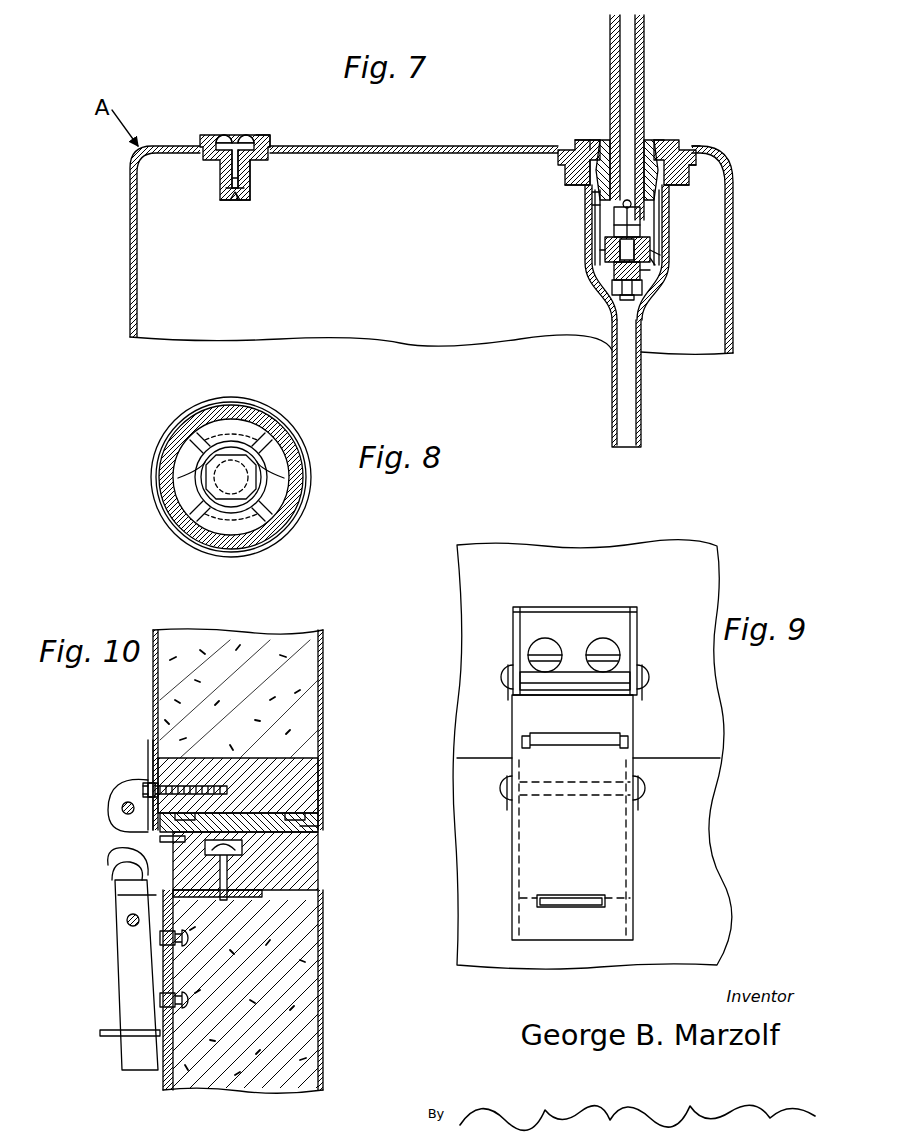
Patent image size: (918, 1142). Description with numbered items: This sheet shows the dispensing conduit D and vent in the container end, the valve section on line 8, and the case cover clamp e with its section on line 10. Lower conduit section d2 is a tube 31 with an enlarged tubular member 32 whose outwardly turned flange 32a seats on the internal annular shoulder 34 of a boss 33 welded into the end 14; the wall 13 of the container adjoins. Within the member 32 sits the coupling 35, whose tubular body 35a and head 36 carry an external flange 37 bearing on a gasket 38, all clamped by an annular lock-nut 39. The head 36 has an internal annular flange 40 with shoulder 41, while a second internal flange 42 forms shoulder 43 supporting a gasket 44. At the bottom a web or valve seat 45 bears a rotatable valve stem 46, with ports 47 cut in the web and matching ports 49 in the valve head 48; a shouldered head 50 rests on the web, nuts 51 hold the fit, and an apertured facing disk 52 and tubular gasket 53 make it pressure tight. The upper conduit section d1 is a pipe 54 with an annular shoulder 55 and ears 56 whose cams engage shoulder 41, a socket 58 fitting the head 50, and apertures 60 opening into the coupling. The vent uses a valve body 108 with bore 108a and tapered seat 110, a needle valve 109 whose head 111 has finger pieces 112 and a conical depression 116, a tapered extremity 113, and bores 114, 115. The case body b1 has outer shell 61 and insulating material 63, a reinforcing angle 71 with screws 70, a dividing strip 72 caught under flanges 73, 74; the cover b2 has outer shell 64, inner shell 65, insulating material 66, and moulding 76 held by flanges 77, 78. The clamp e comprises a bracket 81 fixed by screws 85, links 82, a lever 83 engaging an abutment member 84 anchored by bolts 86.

In FIG. 7, the tank wall 13 is at (733, 306).
In FIG. 7, the end of the container 14 is at (435, 145).
In FIG. 7, the valve body 108 is at (220, 165).
In FIG. 7, the bore 108a is at (241, 201).
In FIG. 7, the needle valve 109 is at (252, 179).
In FIG. 7, the tapered valve seat 110 is at (237, 201).
In FIG. 7, the head 111 is at (268, 148).
In FIG. 7, the finger pieces 112 is at (226, 135).
In FIG. 7, the tapered extremity 113 is at (252, 198).
In FIG. 7, the longitudinal bore 114 is at (232, 177).
In FIG. 7, the transverse bore 115 is at (234, 191).
In FIG. 7, the conical depression 116 is at (244, 140).
In FIG. 7, the tube 31 is at (641, 385).
In FIG. 7, the enlarged tubular member 32 is at (660, 300).
In FIG. 8, the enlarged tubular member 32 is at (301, 438).
In FIG. 7, the outwardly turned flange 32a is at (697, 166).
In FIG. 7, the boss 33 is at (562, 178).
In FIG. 7, the internal annular shoulder 34 is at (690, 182).
In FIG. 7, the coupling 35 is at (661, 212).
In FIG. 7, the tubular body 35a is at (598, 230).
In FIG. 8, the tubular body 35a is at (158, 446).
In FIG. 7, the head 36 is at (566, 187).
In FIG. 7, the external flange 37 is at (560, 166).
In FIG. 7, the gasket 38 is at (703, 151).
In FIG. 7, the annular lock-nut 39 is at (692, 146).
In FIG. 7, the internal annular flange 40 is at (582, 140).
In FIG. 7, the shoulder 41 is at (598, 138).
In FIG. 7, the second internal flange 42 is at (614, 216).
In FIG. 7, the second shoulder 43 is at (594, 206).
In FIG. 7, the gasket 44 is at (594, 194).
In FIG. 7, the web or valve seat 45 is at (620, 269).
In FIG. 8, the web or valve seat 45 is at (248, 428).
In FIG. 7, the valve stem 46 is at (651, 246).
In FIG. 7, the ports 47 is at (612, 252).
In FIG. 8, the ports 47 is at (178, 478).
In FIG. 7, the valve head 48 is at (643, 273).
In FIG. 7, the ports 49 is at (650, 264).
In FIG. 8, the ports 49 is at (211, 430).
In FIG. 7, the shouldered head 50 is at (620, 232).
In FIG. 8, the shouldered head 50 is at (228, 500).
In FIG. 7, the nuts 51 is at (625, 292).
In FIG. 7, the apertured facing disk 52 is at (652, 258).
In FIG. 7, the tubular gasket 53 is at (618, 286).
In FIG. 7, the tube or pipe 54 is at (612, 52).
In FIG. 7, the annular shoulder 55 is at (668, 140).
In FIG. 7, the ears 56 is at (607, 140).
In FIG. 7, the socket 58 is at (641, 226).
In FIG. 7, the apertures 60 is at (648, 140).
In FIG. 7, the section line 8- 8 is at (562, 213).
In FIG. 7, the dispensing conduit D is at (656, 134).
In FIG. 7, the upper conduit section d1 is at (647, 36).
In FIG. 7, the lower conduit section d2 is at (612, 402).
In FIG. 9, the section line 10- 10 is at (603, 562).
In FIG. 10, the outer shell 61 is at (323, 942).
In FIG. 10, the heat insulating material 63 is at (285, 1065).
In FIG. 9, the outer shell 64 is at (685, 556).
In FIG. 10, the outer shell 64 is at (153, 691).
In FIG. 9, the inner shell 65 is at (700, 935).
In FIG. 10, the inner shell 65 is at (323, 722).
In FIG. 10, the insulating material 66 is at (255, 657).
In FIG. 10, the screws 70 is at (282, 856).
In FIG. 10, the reinforcing angle 71 is at (262, 893).
In FIG. 10, the dividing strip 72 is at (300, 797).
In FIG. 10, the flange 73 is at (318, 832).
In FIG. 10, the flange 74 is at (172, 839).
In FIG. 10, the moulding 76 is at (310, 772).
In FIG. 10, the flange 77 is at (320, 818).
In FIG. 10, the flange 78 is at (142, 790).
In FIG. 9, the bracket 81 is at (568, 605).
In FIG. 10, the bracket 81 is at (148, 748).
In FIG. 9, the links 82 is at (508, 705).
In FIG. 10, the links 82 is at (110, 822).
In FIG. 9, the lever 83 is at (600, 848).
In FIG. 10, the lever 83 is at (148, 1001).
In FIG. 9, the abutment member 84 is at (566, 733).
In FIG. 10, the abutment member 84 is at (110, 866).
In FIG. 9, the screws 85 is at (606, 646).
In FIG. 10, the screws 85 is at (146, 788).
In FIG. 10, the bolts 86 is at (160, 941).
In FIG. 9, the body b1 is at (722, 832).
In FIG. 10, the body b1 is at (323, 1008).
In FIG. 9, the removable cover b2 is at (719, 722).
In FIG. 10, the removable cover b2 is at (323, 668).
In FIG. 9, the releasable cover clamps e is at (500, 782).
In FIG. 10, the releasable cover clamps e is at (106, 930).